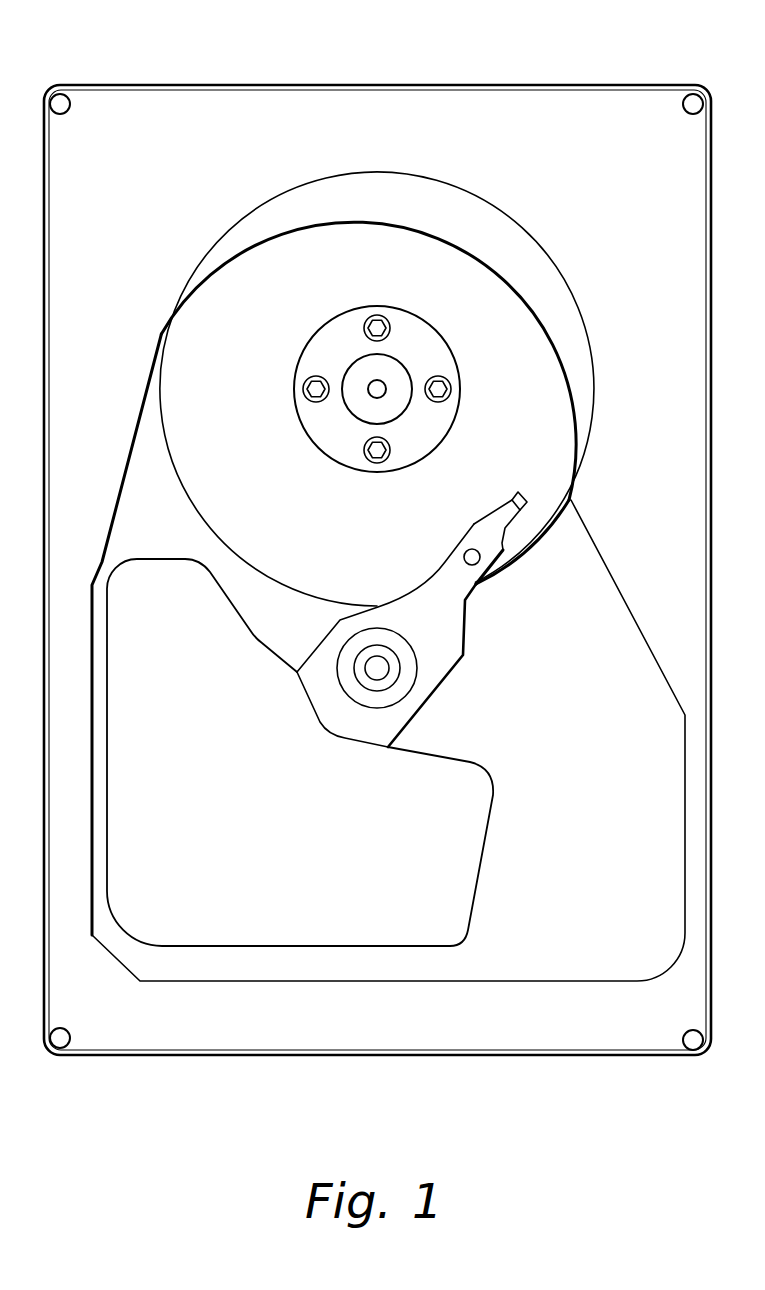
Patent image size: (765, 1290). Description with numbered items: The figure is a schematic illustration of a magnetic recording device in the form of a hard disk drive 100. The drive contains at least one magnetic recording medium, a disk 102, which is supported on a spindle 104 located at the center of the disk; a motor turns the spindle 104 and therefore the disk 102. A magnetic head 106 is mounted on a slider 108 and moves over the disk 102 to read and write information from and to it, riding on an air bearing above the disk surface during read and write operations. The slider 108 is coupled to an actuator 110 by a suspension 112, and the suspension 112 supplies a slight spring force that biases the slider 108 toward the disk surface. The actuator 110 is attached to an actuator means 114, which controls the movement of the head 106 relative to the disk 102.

The hard disk drive 100 is at (618, 32).
The disk 102 is at (280, 240).
The spindle 104 is at (365, 370).
The magnetic head 106 is at (518, 492).
The slider 108 is at (485, 537).
The actuator 110 is at (380, 668).
The suspension 112 is at (437, 613).
The actuator means 114 is at (452, 858).